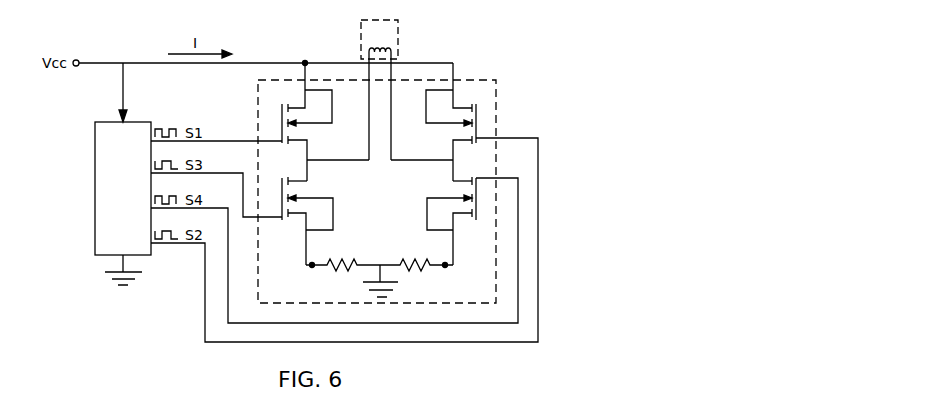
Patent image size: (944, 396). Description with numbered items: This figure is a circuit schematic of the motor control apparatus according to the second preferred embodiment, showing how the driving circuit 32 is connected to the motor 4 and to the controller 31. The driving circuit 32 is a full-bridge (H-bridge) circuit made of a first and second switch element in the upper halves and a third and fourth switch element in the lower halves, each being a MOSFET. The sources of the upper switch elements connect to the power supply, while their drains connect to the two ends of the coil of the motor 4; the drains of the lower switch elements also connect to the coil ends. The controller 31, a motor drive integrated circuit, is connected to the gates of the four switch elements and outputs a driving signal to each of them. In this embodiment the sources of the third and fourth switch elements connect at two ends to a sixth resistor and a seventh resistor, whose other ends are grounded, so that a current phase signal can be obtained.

The motor 4 is at (398, 42).
The controller 31 is at (94, 189).
The driving circuit 32 is at (473, 80).